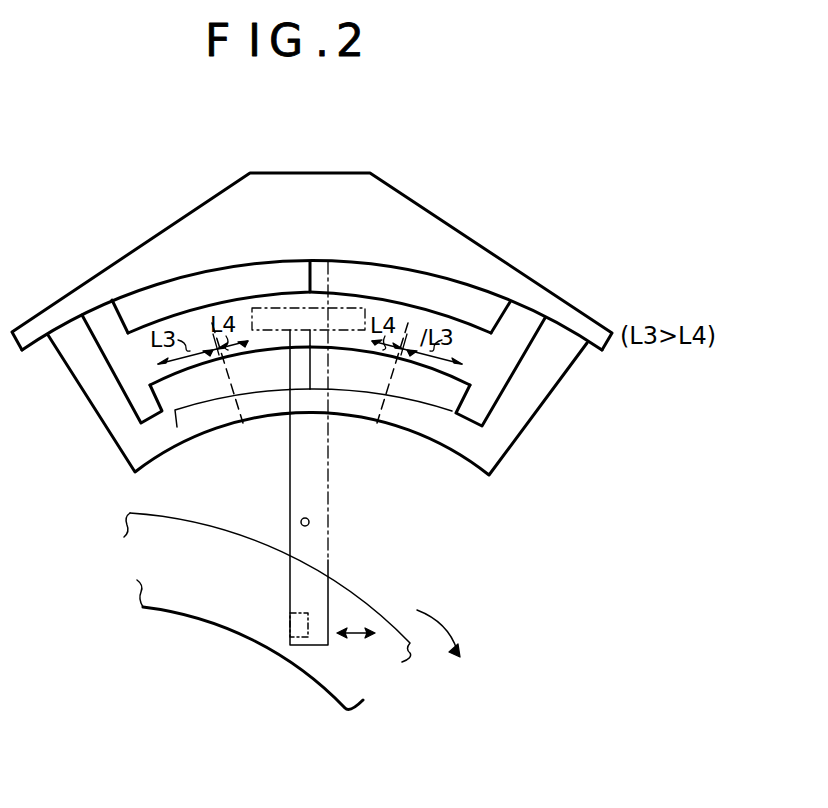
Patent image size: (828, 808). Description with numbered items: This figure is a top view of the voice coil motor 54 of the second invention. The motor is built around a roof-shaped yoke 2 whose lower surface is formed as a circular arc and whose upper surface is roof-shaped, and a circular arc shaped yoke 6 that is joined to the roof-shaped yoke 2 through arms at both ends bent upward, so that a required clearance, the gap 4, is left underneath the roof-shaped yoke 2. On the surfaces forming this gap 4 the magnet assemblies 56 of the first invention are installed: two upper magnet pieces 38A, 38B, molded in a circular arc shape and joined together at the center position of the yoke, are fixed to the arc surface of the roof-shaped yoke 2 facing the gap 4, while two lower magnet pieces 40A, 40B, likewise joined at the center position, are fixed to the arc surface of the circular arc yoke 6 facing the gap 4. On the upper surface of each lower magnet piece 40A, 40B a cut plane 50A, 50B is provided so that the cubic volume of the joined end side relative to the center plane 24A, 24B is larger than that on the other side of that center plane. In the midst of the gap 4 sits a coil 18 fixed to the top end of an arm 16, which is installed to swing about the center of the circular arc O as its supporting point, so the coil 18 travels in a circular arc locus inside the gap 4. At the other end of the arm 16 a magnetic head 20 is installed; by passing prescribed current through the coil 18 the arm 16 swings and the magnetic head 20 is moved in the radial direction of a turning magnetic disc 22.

The roof-shaped yoke 2 is at (558, 312).
The gap 4 is at (500, 368).
The circular arc shaped yoke 6 is at (470, 440).
The arm 16 is at (313, 553).
The coil 18 is at (317, 312).
The magnetic head 20 is at (266, 630).
The magnetic disc 22 is at (170, 596).
The center plane 24A is at (378, 427).
The center plane 24B is at (243, 427).
The upper magnet piece 38A is at (458, 298).
The upper magnet piece 38B is at (143, 307).
The lower magnet piece 40A is at (429, 392).
The lower magnet piece 40B is at (207, 392).
The cut plane 50A is at (462, 411).
The cut plane 50B is at (187, 387).
The voice coil motor 54 is at (534, 736).
The magnet assembly 56 is at (120, 333).
The center of the circular arc O is at (309, 522).